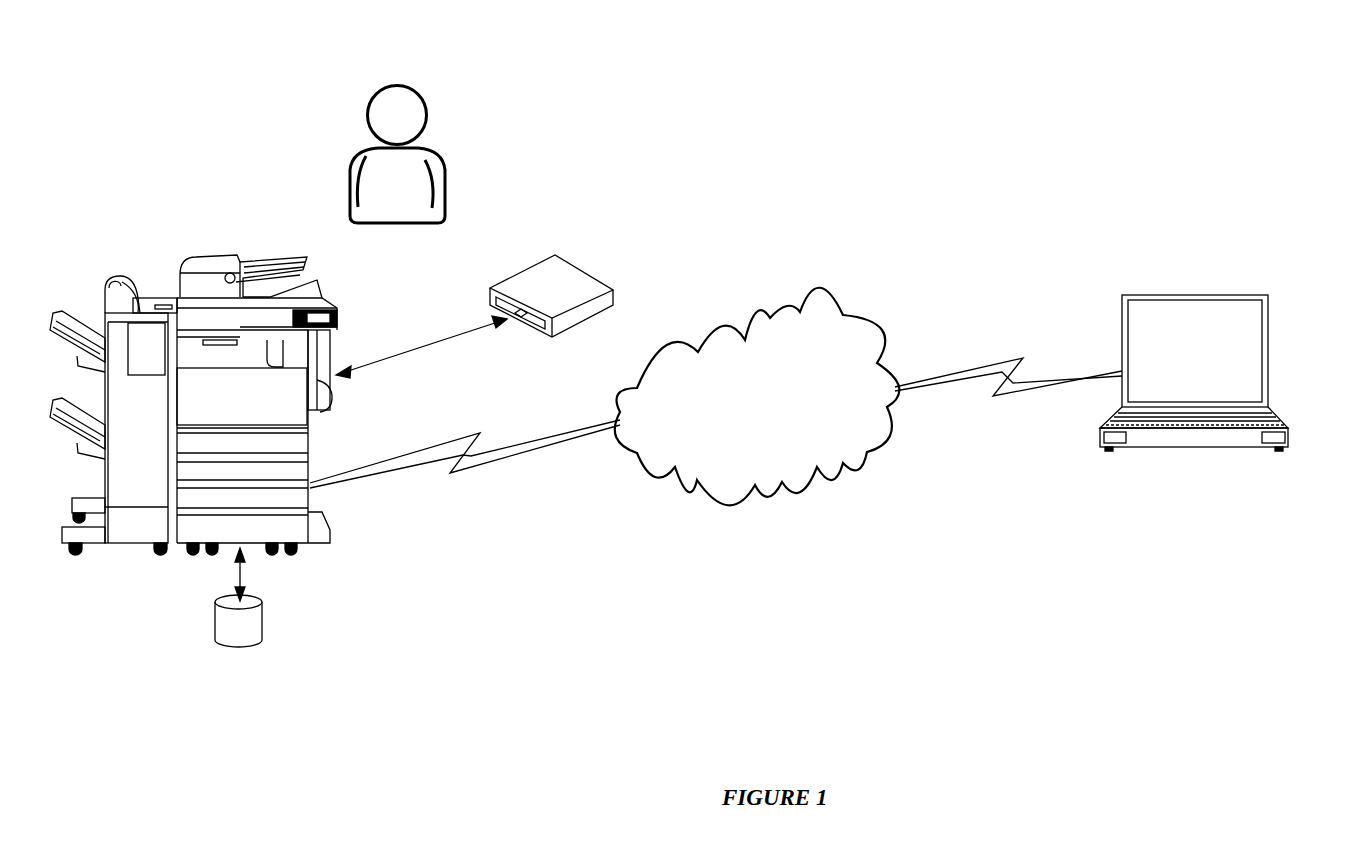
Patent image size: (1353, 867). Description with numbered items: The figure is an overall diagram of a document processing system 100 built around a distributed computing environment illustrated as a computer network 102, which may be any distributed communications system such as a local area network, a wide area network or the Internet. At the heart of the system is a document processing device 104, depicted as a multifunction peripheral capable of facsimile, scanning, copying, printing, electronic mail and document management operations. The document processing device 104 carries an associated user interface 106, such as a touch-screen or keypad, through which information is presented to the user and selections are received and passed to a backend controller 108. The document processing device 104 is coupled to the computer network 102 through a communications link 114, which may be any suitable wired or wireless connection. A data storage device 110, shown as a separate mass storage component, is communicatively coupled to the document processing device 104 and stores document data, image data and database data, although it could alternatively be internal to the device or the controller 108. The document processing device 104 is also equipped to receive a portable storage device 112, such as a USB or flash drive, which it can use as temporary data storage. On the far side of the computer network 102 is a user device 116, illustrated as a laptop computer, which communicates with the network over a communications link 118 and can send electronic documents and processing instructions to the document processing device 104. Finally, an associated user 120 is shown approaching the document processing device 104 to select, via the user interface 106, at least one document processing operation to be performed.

The document processing system 100 is at (219, 203).
The computer network 102 is at (820, 291).
The document processing device 104 is at (212, 258).
The user interface 106 is at (336, 312).
The controller 108 is at (319, 418).
The data storage device 110 is at (262, 601).
The portable storage device 112 is at (557, 247).
The communications link 114 is at (470, 431).
The user device 116 is at (1234, 295).
The communications link 118 is at (998, 357).
The associated user 120 is at (443, 152).